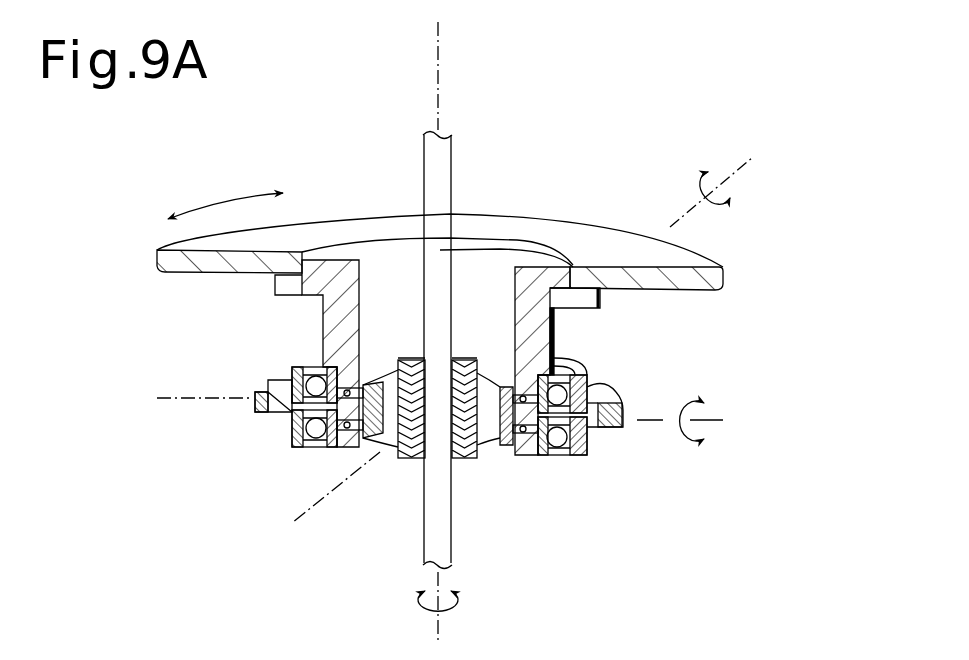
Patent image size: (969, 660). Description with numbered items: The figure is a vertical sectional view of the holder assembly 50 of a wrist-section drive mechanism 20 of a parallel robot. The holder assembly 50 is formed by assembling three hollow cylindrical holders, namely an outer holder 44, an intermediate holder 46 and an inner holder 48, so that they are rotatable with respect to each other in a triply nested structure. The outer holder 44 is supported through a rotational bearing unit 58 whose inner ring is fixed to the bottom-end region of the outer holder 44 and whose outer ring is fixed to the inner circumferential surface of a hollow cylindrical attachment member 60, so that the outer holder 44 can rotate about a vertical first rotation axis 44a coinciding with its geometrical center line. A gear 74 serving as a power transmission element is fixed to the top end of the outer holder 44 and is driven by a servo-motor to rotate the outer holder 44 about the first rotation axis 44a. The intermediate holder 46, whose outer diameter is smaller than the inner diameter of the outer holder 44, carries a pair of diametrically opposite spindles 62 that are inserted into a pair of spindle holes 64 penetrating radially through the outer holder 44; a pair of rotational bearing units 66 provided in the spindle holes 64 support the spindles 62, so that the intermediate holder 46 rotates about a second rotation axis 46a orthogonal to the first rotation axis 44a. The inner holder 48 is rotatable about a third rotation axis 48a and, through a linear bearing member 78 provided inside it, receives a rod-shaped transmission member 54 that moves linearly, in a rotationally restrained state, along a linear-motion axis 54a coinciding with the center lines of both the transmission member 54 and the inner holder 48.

The wrist-section drive mechanism 20 is at (635, 99).
The outer holder 44 is at (323, 321).
The first rotation axis 44a is at (440, 40).
The intermediate holder 46 is at (490, 422).
The second rotation axis 46a is at (178, 400).
The inner holder 48 is at (407, 360).
The third rotation axis 48a is at (300, 517).
The holder assembly 50 is at (692, 321).
The transmission member 54 is at (430, 153).
The linear-motion axis 54a is at (437, 631).
The rotational bearing unit 58 is at (556, 447).
The attachment member 60 is at (618, 388).
The spindles 62 is at (520, 435).
The spindle holes 64 is at (556, 356).
The rotational bearing units 66 is at (342, 445).
The gear 74 is at (587, 233).
The linear bearing member 78 is at (462, 360).